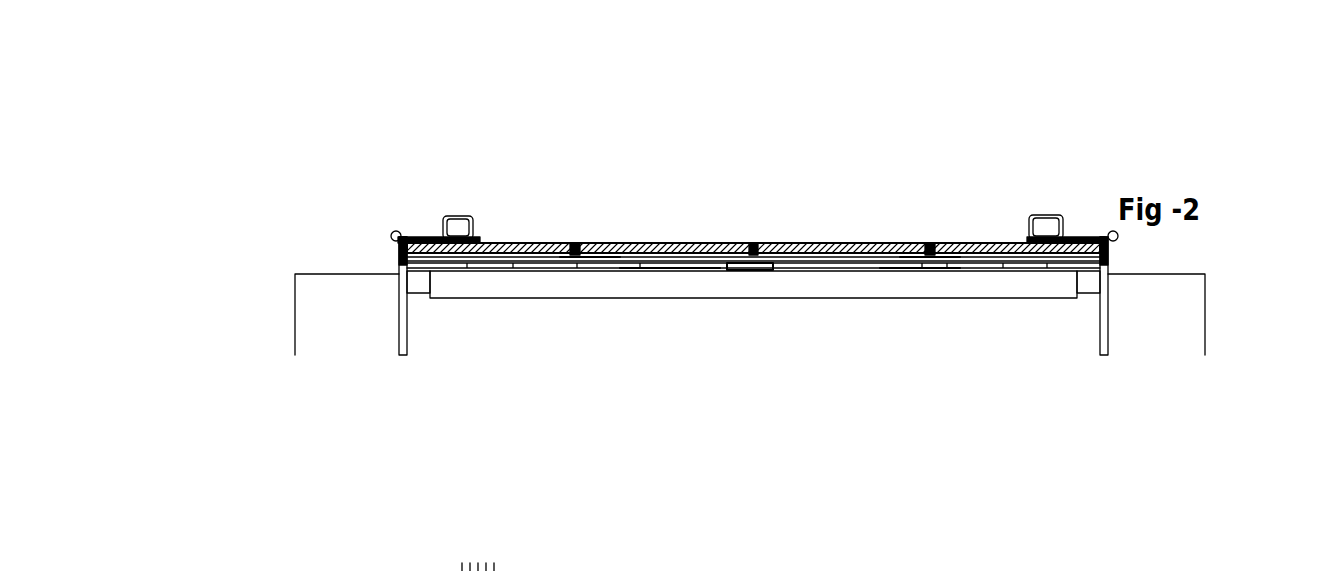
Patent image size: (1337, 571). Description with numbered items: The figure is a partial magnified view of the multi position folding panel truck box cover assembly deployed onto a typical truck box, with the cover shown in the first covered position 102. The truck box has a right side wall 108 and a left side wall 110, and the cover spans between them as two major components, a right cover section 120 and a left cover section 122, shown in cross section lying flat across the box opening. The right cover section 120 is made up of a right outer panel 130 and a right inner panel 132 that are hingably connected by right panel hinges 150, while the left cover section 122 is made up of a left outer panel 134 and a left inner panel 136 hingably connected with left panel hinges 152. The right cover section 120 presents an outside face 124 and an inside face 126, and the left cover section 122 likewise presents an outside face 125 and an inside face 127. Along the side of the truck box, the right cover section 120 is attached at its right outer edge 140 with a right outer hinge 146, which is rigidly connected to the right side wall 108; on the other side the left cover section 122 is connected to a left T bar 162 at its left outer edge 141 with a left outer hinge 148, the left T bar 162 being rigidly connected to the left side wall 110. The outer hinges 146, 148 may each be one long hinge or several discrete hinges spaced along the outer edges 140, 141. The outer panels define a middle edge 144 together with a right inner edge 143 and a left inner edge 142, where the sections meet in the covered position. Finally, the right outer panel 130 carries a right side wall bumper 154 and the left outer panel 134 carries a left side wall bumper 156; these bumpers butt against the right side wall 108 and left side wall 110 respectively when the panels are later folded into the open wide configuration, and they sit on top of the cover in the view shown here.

The first covered position 102 is at (318, 445).
The right side wall 108 is at (1160, 330).
The left side wall 110 is at (333, 320).
The right cover section 120 is at (998, 152).
The left cover section 122 is at (452, 178).
The outside face 124 is at (902, 241).
The outside face 125 is at (610, 241).
The inside face 126 is at (933, 262).
The inside face 127 is at (637, 270).
The right outer panel 130 is at (963, 240).
The right inner panel 132 is at (835, 241).
The left outer panel 134 is at (523, 241).
The left inner panel 136 is at (625, 241).
The right outer edge 140 is at (1115, 248).
The left outer edge 141 is at (394, 250).
The left inner edge 142 is at (752, 240).
The right inner edge 143 is at (755, 238).
The middle edge 144 is at (572, 258).
The right outer hinge 146 is at (1120, 236).
The left outer hinge 148 is at (391, 233).
The right panel hinges 150 is at (928, 260).
The left panel hinges 152 is at (580, 262).
The right side wall bumper 154 is at (1057, 215).
The left side wall bumper 156 is at (440, 222).
The left T bar 162 is at (405, 268).